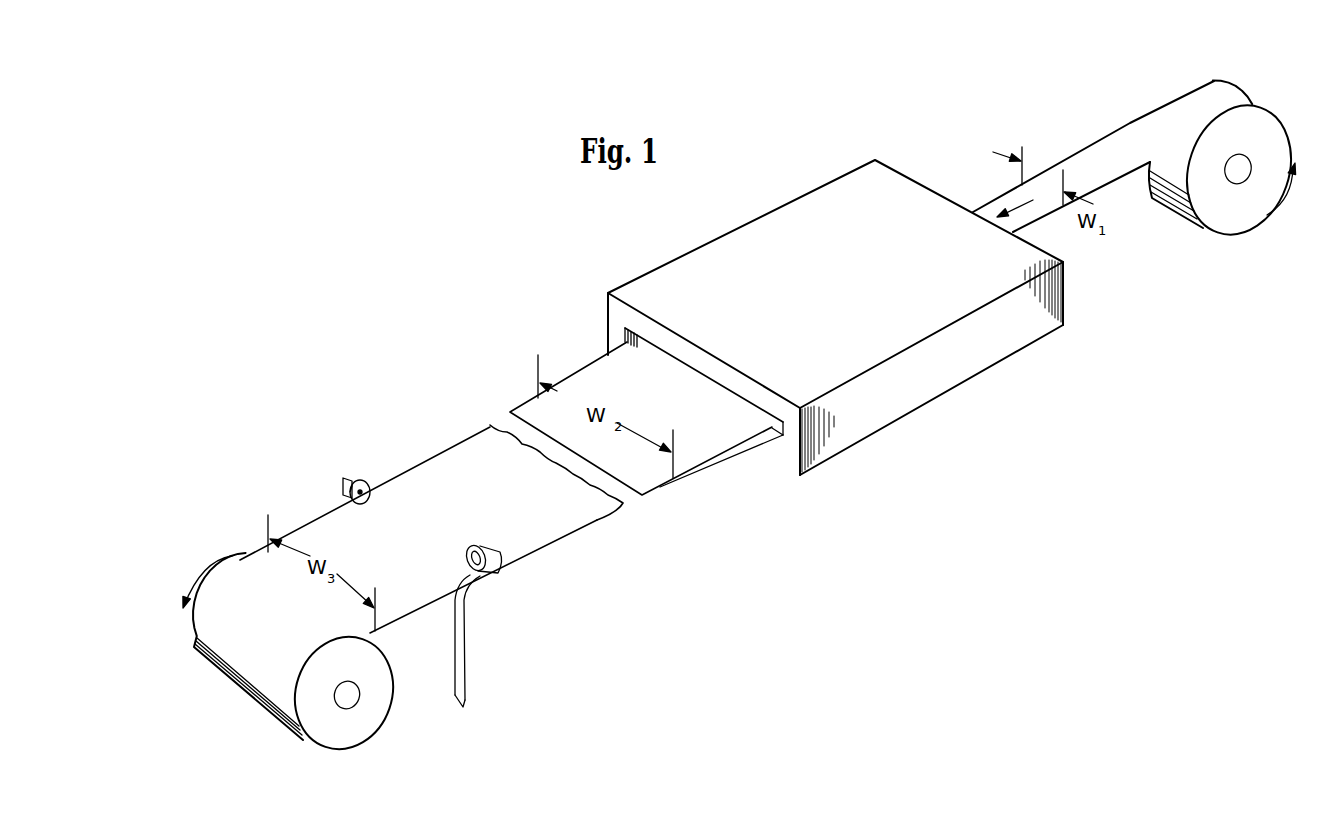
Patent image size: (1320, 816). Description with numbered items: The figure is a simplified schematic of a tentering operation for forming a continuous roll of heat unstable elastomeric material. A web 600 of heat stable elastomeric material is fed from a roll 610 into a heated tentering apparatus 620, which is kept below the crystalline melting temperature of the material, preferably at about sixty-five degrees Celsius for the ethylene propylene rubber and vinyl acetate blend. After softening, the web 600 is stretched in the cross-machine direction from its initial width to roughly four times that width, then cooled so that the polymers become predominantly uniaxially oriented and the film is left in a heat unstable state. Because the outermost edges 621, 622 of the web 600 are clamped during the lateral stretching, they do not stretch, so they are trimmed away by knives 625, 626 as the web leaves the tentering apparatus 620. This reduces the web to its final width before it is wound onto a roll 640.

The web 600 is at (1120, 150).
The roll 610 is at (1182, 213).
The tentering apparatus 620 is at (993, 356).
The outermost edge 621 is at (467, 633).
The outermost edge 622 is at (336, 516).
The knife 625 is at (364, 482).
The knife 626 is at (505, 562).
The roll 640 is at (363, 714).